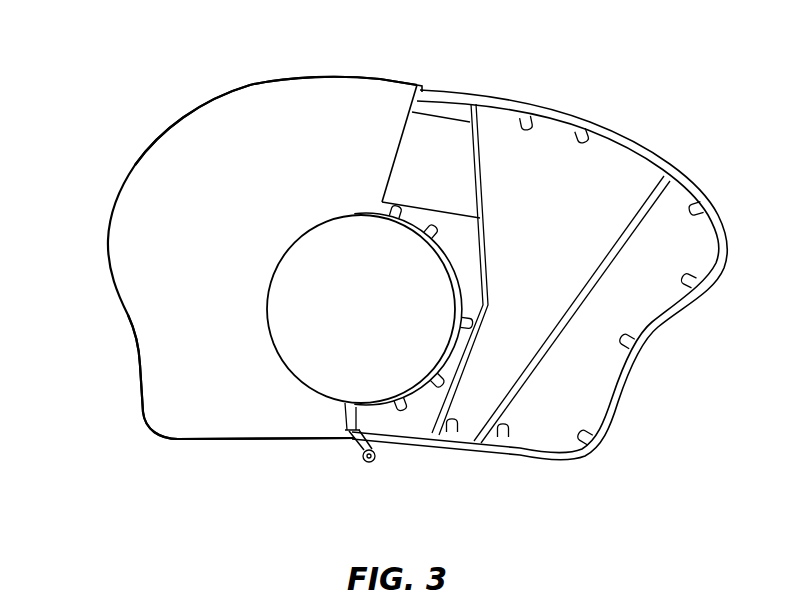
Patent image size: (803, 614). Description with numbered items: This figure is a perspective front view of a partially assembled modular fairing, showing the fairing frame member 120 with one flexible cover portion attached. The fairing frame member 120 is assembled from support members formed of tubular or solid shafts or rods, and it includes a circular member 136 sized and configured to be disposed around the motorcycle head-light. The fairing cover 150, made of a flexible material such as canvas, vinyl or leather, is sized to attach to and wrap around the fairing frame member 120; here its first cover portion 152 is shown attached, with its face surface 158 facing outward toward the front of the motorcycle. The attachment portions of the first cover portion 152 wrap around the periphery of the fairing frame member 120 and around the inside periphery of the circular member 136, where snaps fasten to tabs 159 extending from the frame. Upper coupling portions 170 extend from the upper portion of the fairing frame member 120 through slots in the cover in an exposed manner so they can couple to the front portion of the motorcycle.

The fairing cover 150 is at (197, 106).
The face surface 158 is at (310, 95).
The first cover portion 152 is at (140, 366).
The fairing frame member 120 is at (567, 460).
The upper coupling portions 170 is at (528, 120).
The circular member 136 is at (443, 266).
The tabs 159 is at (405, 415).